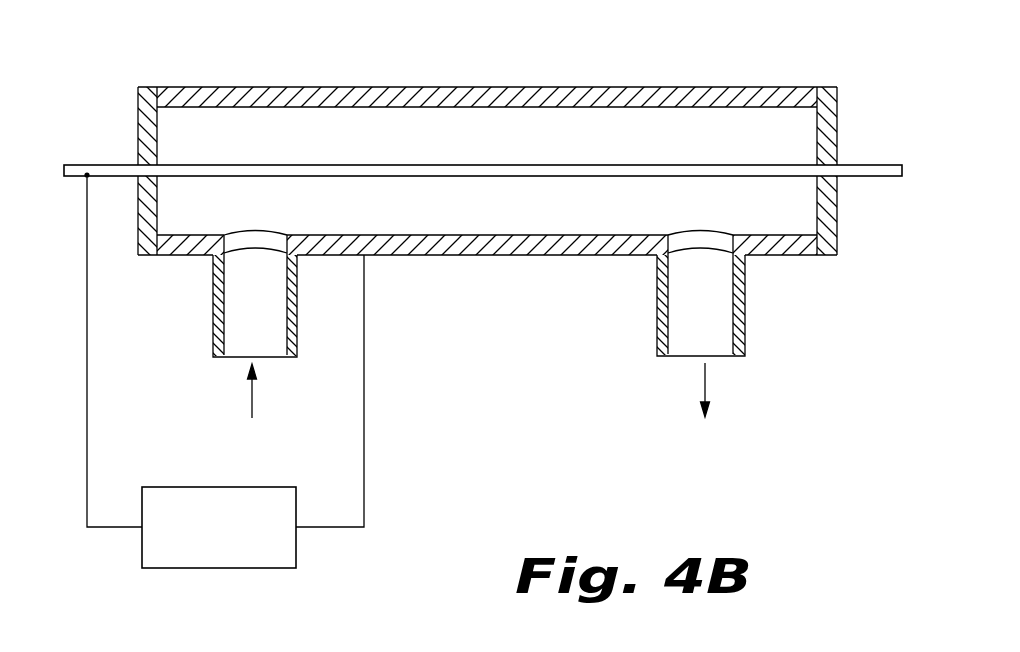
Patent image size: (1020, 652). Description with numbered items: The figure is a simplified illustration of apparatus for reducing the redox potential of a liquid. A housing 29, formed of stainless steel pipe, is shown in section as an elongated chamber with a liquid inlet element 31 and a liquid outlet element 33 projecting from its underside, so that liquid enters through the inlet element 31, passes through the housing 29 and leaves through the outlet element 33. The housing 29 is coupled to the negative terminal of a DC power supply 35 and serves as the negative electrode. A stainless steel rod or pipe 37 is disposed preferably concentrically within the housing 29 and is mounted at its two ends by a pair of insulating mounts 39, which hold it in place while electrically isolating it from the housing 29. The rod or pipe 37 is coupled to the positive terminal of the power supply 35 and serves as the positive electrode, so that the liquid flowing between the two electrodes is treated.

The housing 29 is at (578, 93).
The liquid inlet element 31 is at (213, 289).
The liquid outlet element 33 is at (657, 291).
The DC power supply 35 is at (208, 487).
The stainless steel rod or pipe 37 is at (475, 170).
The insulating mounts 39 is at (138, 138).